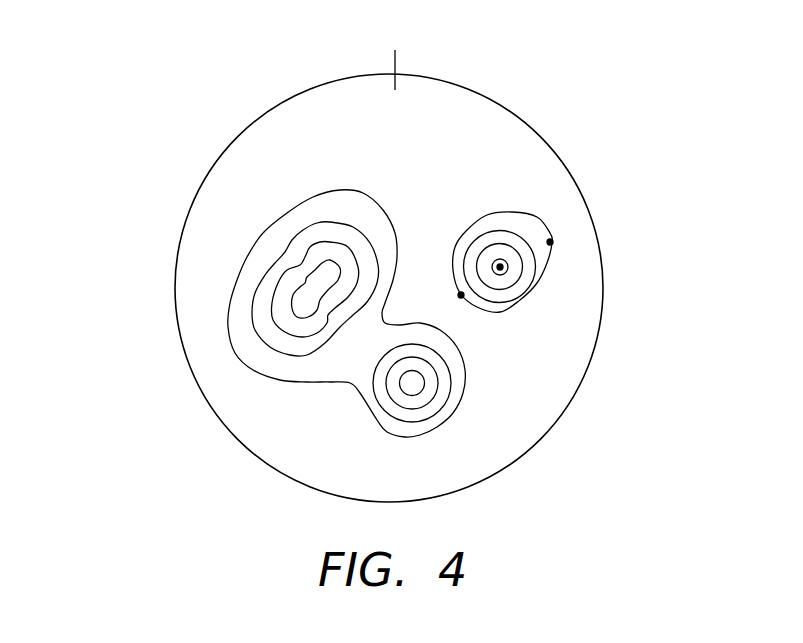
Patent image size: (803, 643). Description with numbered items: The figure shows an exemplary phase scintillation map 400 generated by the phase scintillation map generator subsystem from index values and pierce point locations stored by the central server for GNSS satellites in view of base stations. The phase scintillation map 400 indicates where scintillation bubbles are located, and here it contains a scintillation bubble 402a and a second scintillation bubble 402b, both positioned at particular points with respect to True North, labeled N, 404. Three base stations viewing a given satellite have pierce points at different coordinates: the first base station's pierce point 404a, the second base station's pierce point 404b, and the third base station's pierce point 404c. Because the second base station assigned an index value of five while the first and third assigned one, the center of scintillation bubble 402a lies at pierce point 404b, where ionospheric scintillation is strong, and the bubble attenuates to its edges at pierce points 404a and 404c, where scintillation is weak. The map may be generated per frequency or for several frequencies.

The phase scintillation map 400 is at (564, 106).
The scintillation bubble 402a is at (543, 225).
The second scintillation bubble 402b is at (228, 318).
The True North 404 is at (405, 37).
The pierce point 404a is at (461, 295).
The pierce point 404b is at (500, 267).
The pierce point 404c is at (550, 242).